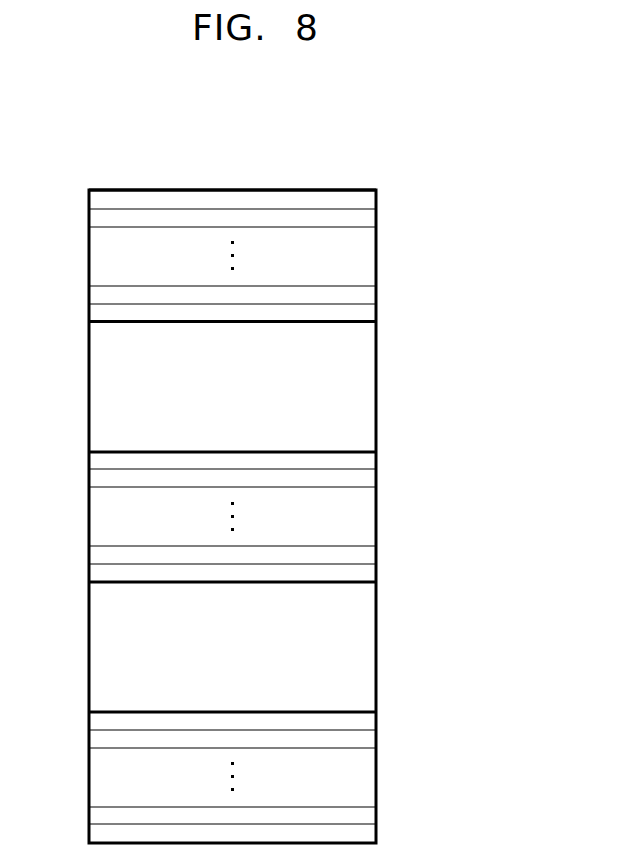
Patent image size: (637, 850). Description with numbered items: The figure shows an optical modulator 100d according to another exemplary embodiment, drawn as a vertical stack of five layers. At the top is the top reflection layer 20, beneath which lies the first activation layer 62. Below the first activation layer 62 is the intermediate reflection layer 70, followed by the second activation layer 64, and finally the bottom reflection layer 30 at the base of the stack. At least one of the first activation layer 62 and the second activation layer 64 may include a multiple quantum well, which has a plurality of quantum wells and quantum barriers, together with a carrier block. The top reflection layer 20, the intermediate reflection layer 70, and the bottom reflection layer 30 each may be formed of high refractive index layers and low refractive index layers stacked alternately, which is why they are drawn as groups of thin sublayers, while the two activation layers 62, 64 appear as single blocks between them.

The optical modulator 100d is at (392, 145).
The top reflection layer 20 is at (83, 193).
The first activation layer 62 is at (83, 325).
The intermediate reflection layer 70 is at (83, 455).
The second activation layer 64 is at (83, 585).
The bottom reflection layer 30 is at (83, 715).